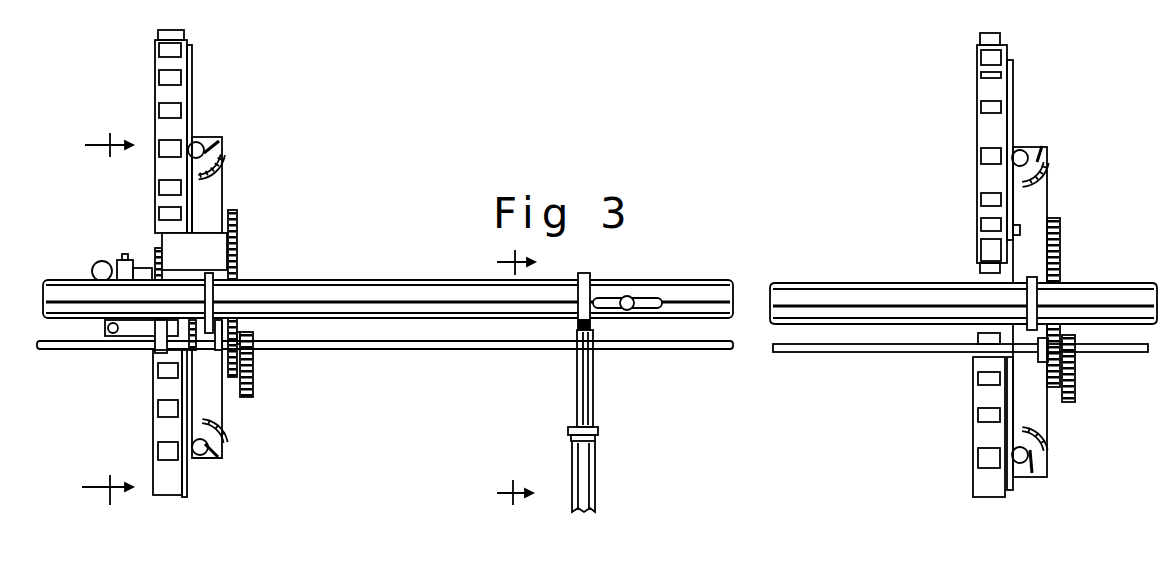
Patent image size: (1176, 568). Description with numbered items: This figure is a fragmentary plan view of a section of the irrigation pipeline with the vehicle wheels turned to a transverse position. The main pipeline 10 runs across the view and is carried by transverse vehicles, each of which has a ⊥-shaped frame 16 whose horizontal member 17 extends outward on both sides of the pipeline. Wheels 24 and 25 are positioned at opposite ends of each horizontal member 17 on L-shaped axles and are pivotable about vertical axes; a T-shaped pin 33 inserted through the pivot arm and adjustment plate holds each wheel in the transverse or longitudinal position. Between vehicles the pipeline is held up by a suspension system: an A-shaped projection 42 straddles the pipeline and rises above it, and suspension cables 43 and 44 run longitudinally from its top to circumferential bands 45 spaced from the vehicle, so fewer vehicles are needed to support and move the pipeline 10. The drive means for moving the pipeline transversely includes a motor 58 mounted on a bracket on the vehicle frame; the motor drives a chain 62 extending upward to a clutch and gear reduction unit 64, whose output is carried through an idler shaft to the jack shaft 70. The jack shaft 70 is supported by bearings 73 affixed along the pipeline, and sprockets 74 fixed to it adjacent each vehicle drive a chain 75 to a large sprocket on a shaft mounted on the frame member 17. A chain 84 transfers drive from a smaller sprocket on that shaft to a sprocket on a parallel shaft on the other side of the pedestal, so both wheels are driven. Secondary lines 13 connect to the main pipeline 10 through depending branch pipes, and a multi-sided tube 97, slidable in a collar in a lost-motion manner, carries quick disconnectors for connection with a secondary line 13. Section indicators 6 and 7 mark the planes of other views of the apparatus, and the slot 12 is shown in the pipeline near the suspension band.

The section line 6- 6 is at (111, 319).
The section line 7- 7 is at (520, 377).
The main pipeline 10 is at (376, 284).
The slot with pin 12 is at (631, 298).
The secondary line 13 is at (596, 472).
The frame 16 is at (1052, 199).
The horizontal member 17 is at (222, 197).
The wheel 24 is at (190, 492).
The wheel 25 is at (181, 66).
The T-shaped pin 33 is at (1042, 151).
The A-shaped projection 42 is at (217, 290).
The suspension cable 43 is at (860, 300).
The suspension cable 44 is at (1119, 290).
The circumferential band 45 is at (585, 275).
The motor 58 is at (110, 266).
The chain 62 is at (155, 260).
The clutch and gear reduction unit 64 is at (207, 261).
The jack shaft 70 is at (382, 350).
The bearing 73 is at (152, 346).
The sprocket 74 is at (258, 337).
The chain 75 is at (254, 366).
The chain 84 is at (238, 231).
The tube 97 is at (594, 404).